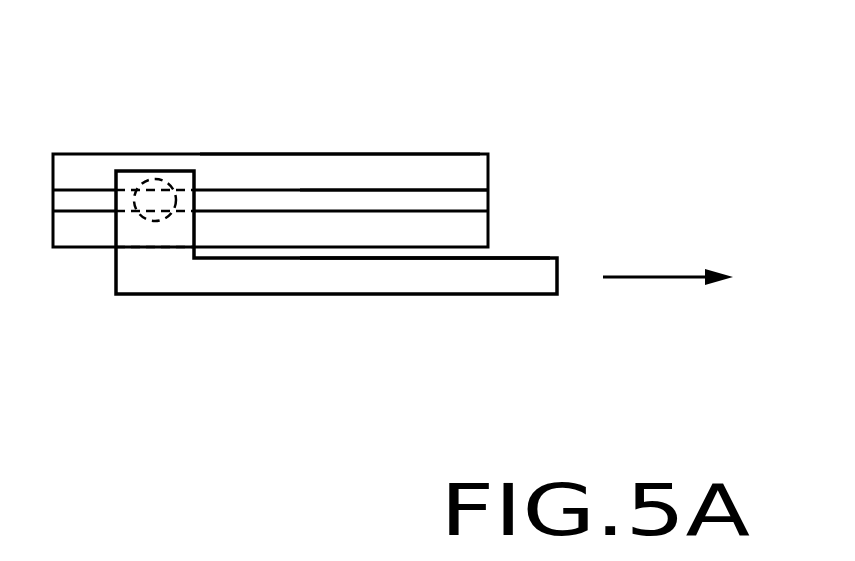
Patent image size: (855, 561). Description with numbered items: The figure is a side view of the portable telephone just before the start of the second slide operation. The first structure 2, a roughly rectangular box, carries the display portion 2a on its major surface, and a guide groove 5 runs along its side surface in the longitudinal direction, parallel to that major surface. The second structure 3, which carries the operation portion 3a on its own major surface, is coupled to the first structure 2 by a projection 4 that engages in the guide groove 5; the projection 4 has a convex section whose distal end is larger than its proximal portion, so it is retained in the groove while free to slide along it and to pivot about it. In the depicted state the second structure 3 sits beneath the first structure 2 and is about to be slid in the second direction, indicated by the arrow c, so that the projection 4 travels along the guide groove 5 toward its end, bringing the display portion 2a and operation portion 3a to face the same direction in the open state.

The first structure 2 is at (89, 153).
The display portion 2a is at (376, 140).
The guide groove 5 is at (494, 186).
The second structure 3 is at (263, 296).
The operation portion 3a is at (455, 276).
The projection 4 is at (140, 228).
The arrow indicating second direction c is at (662, 276).